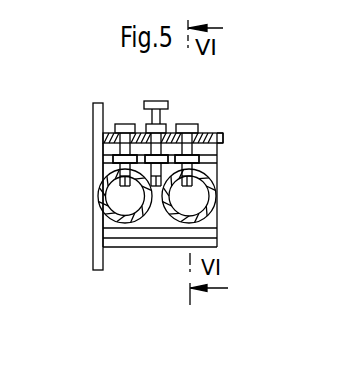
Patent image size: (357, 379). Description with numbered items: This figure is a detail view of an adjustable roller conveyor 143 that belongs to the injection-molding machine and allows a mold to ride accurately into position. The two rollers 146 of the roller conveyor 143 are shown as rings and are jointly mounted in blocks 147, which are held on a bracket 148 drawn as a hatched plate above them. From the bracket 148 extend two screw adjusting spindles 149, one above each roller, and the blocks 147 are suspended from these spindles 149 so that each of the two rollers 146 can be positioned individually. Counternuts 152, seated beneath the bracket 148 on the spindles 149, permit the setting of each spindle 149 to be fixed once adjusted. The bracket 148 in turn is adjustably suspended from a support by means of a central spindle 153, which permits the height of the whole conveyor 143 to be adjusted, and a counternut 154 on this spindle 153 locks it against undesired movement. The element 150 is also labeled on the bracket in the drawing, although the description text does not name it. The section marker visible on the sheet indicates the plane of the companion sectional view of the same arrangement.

The roller conveyor 143 is at (88, 174).
The rollers 146 is at (212, 208).
The blocks 147 is at (210, 175).
The bracket 148 is at (204, 147).
The screw adjusting spindles 149 is at (124, 124).
The plate end strip 150 is at (223, 140).
The counternuts 152 is at (200, 158).
The spindle 153 is at (154, 101).
The counternut 154 is at (167, 124).